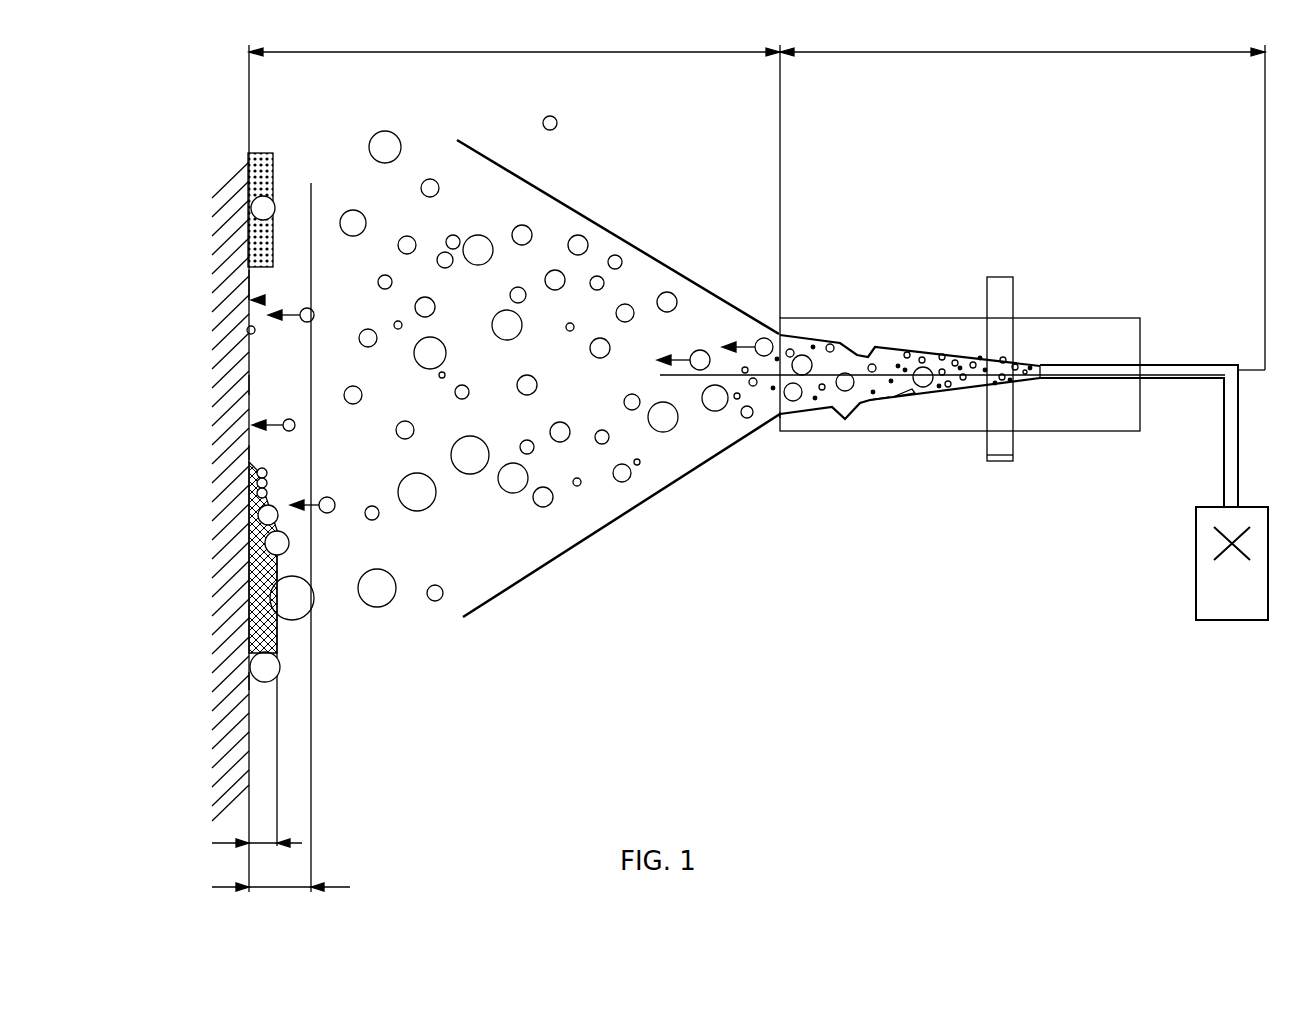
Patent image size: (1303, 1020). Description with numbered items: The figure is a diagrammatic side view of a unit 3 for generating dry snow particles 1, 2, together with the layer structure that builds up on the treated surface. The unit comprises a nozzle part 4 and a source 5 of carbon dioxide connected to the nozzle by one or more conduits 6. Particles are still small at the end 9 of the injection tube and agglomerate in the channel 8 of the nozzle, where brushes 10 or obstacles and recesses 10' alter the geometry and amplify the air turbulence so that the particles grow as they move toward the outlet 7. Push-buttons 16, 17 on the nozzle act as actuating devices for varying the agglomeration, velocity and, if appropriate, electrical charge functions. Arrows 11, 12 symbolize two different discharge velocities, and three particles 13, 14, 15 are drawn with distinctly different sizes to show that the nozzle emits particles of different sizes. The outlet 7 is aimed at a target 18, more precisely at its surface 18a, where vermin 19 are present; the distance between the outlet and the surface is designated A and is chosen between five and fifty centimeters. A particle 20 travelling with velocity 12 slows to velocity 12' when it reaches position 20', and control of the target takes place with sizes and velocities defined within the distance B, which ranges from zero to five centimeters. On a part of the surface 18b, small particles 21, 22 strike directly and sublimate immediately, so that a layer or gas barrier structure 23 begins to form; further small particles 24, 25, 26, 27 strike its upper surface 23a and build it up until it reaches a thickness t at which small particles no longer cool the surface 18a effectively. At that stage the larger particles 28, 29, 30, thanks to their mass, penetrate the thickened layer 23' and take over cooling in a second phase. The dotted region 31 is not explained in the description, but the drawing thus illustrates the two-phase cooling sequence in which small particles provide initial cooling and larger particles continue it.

The dry snow particle 1 is at (840, 343).
The dry snow particle 2 is at (875, 360).
The unit for generating dry snow particles 3 is at (1022, 37).
The nozzle part 4 is at (1078, 325).
The source of carbon dioxide 5 is at (1203, 597).
The conduit 6 is at (1197, 364).
The outlet of the nozzle 7 is at (777, 418).
The channel of the nozzle 8 is at (877, 402).
The end of the injection tube 9 is at (1050, 377).
The brushes 10 is at (932, 437).
The obstacles and/or recesses 10' is at (834, 458).
The discharge velocity arrow 11 is at (756, 347).
The discharge velocity arrow 12 is at (636, 269).
The reduced velocity 12' is at (187, 464).
The dry snow particle 13 is at (764, 338).
The dry snow particle 14 is at (670, 422).
The dry snow particle 15 is at (718, 402).
The push-button 16 is at (998, 277).
The push-button 17 is at (995, 462).
The target 18 is at (218, 410).
The surface of the target 18a is at (247, 290).
The part of the surface 18b is at (265, 300).
The vermin 19 is at (255, 333).
The particle 20 is at (654, 253).
The position of the particle 20' is at (178, 351).
The small particle 21 is at (314, 315).
The small particle 22 is at (292, 420).
The layer or gas barrier structure 23 is at (200, 557).
The thickened layer 23' is at (199, 437).
The upper surface of the layer 23a is at (249, 535).
The small particle 24 is at (330, 512).
The small particle 25 is at (268, 473).
The small particle 26 is at (268, 483).
The small particle 27 is at (268, 493).
The larger particle 28 is at (298, 600).
The larger particle 29 is at (273, 552).
The larger particle 30 is at (248, 680).
The porous layer 31 is at (257, 207).
The distance between nozzle outlet and target surface A is at (514, 39).
The distance B is at (281, 872).
The thickness of the layer t is at (257, 829).